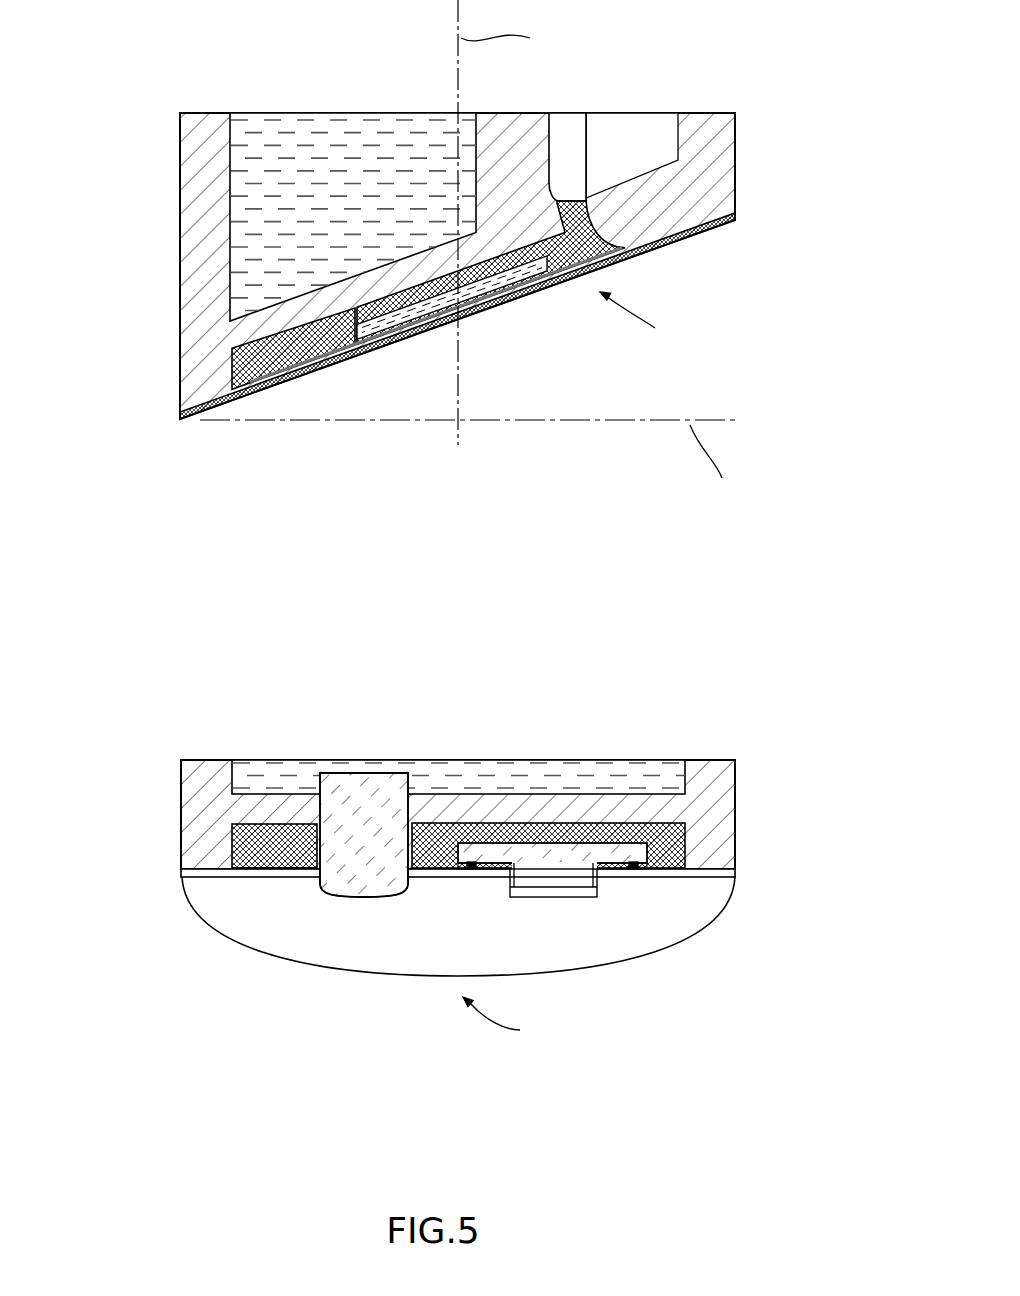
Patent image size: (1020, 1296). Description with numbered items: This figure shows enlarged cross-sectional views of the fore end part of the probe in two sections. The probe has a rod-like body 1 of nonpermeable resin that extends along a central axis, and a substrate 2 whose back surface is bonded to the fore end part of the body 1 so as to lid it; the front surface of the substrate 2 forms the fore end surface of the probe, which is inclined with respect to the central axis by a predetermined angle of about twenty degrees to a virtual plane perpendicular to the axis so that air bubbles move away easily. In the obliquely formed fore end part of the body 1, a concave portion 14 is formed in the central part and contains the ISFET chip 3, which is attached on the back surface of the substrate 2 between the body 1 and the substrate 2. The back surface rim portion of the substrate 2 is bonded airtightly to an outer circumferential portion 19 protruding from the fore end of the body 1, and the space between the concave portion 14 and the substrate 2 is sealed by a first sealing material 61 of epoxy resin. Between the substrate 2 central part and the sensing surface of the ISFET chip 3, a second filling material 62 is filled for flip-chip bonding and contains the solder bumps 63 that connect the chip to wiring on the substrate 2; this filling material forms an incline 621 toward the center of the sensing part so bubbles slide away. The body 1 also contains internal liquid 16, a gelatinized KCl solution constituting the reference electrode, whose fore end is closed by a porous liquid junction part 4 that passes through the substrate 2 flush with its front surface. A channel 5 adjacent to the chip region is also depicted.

The body 1 is at (472, 555).
The substrate 2 is at (735, 212).
The ISFET chip 3 is at (498, 290).
The liquid junction part 4 is at (362, 775).
The flow path 5 is at (592, 120).
The concave portion 14 is at (345, 352).
The internal liquid 16 is at (371, 157).
The outer circumferential portion 19 is at (677, 198).
The first sealing material 61 is at (238, 352).
The second filling material 62 is at (557, 287).
The solder bumps 63 is at (470, 870).
The incline 621 is at (552, 866).